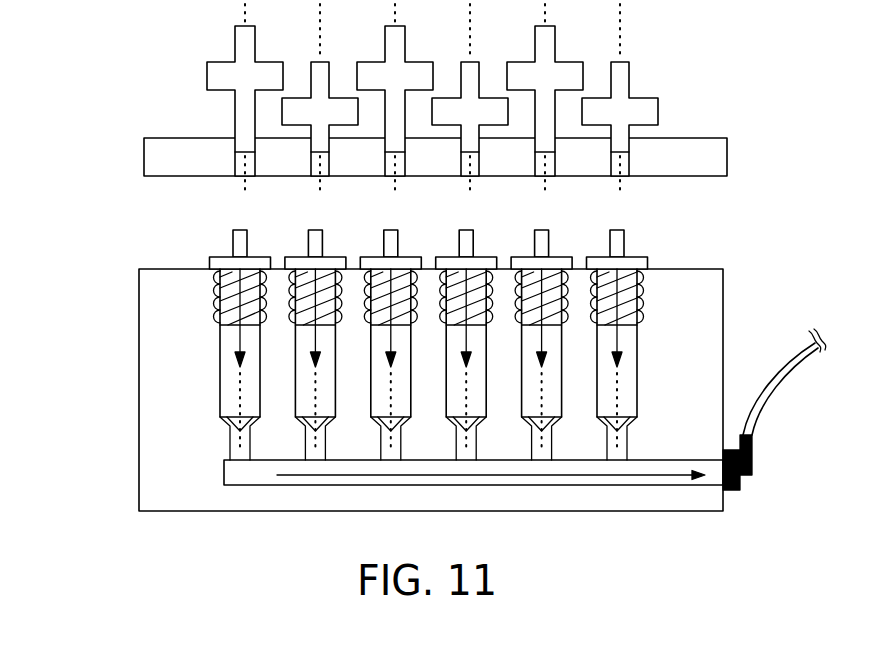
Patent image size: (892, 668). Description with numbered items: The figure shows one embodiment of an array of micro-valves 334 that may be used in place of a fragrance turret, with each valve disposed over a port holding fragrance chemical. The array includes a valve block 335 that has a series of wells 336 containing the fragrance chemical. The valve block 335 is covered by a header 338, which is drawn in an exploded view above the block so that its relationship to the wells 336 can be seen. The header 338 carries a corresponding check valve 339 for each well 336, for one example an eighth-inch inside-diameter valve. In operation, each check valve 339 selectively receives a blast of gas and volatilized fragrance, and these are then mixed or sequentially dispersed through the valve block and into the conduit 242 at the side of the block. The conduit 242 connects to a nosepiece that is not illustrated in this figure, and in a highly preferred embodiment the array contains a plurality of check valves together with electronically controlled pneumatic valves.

The array of micro-valves 334 is at (109, 577).
The valve block 335 is at (156, 393).
The wells 336 is at (628, 389).
The header 338 is at (152, 157).
The check valve 339 is at (207, 72).
The conduit 242 is at (767, 383).